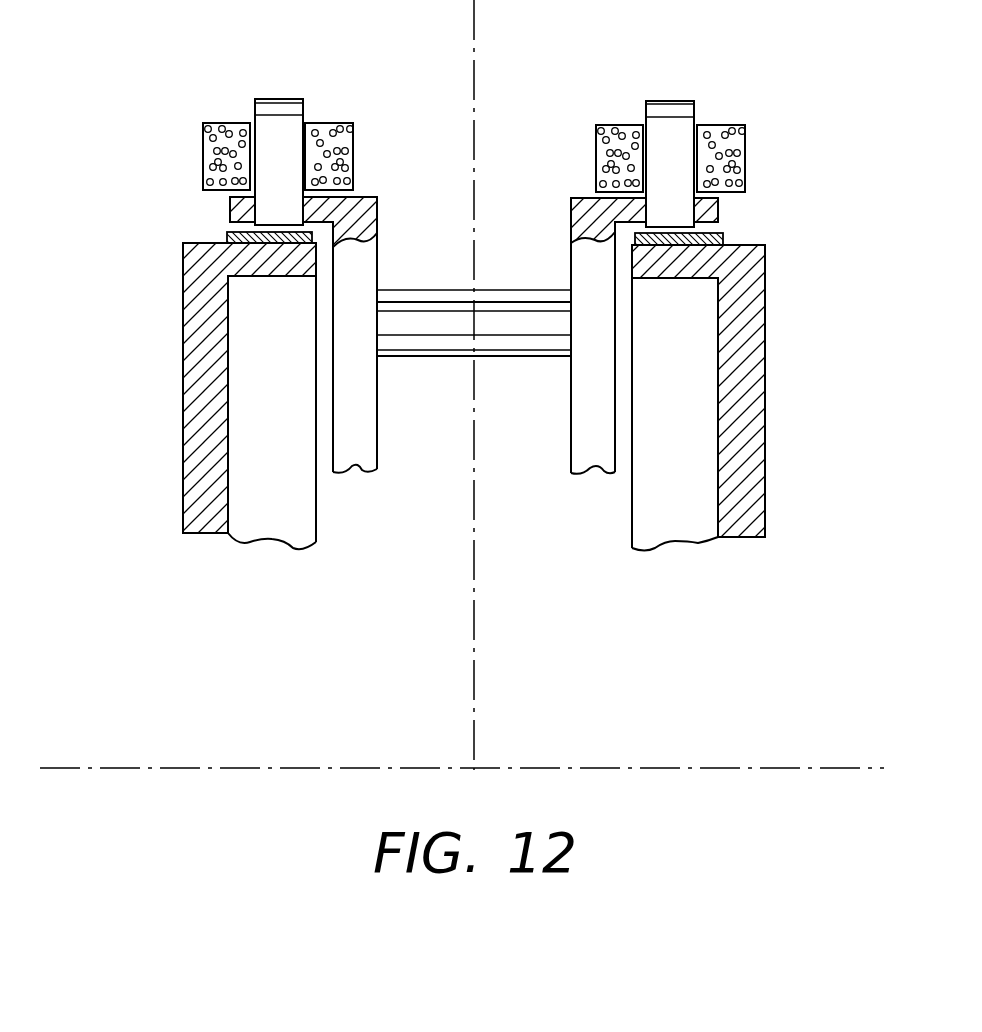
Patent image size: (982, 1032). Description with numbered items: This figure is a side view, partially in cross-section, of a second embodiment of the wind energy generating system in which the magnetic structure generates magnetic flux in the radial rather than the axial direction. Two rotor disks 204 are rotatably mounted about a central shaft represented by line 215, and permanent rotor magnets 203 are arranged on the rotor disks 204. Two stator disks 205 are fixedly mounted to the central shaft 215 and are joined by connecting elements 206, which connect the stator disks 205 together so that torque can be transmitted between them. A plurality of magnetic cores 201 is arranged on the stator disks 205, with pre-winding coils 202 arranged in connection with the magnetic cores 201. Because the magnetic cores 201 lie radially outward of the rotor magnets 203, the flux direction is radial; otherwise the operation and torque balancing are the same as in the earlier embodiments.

The magnetic core 201 is at (257, 97).
The pre-winding coil 202 is at (215, 123).
The permanent rotor magnet 203 is at (227, 232).
The rotor disk 204 is at (183, 303).
The stator disk 205 is at (363, 198).
The connecting element 206 is at (487, 357).
The central shaft 215 is at (705, 768).